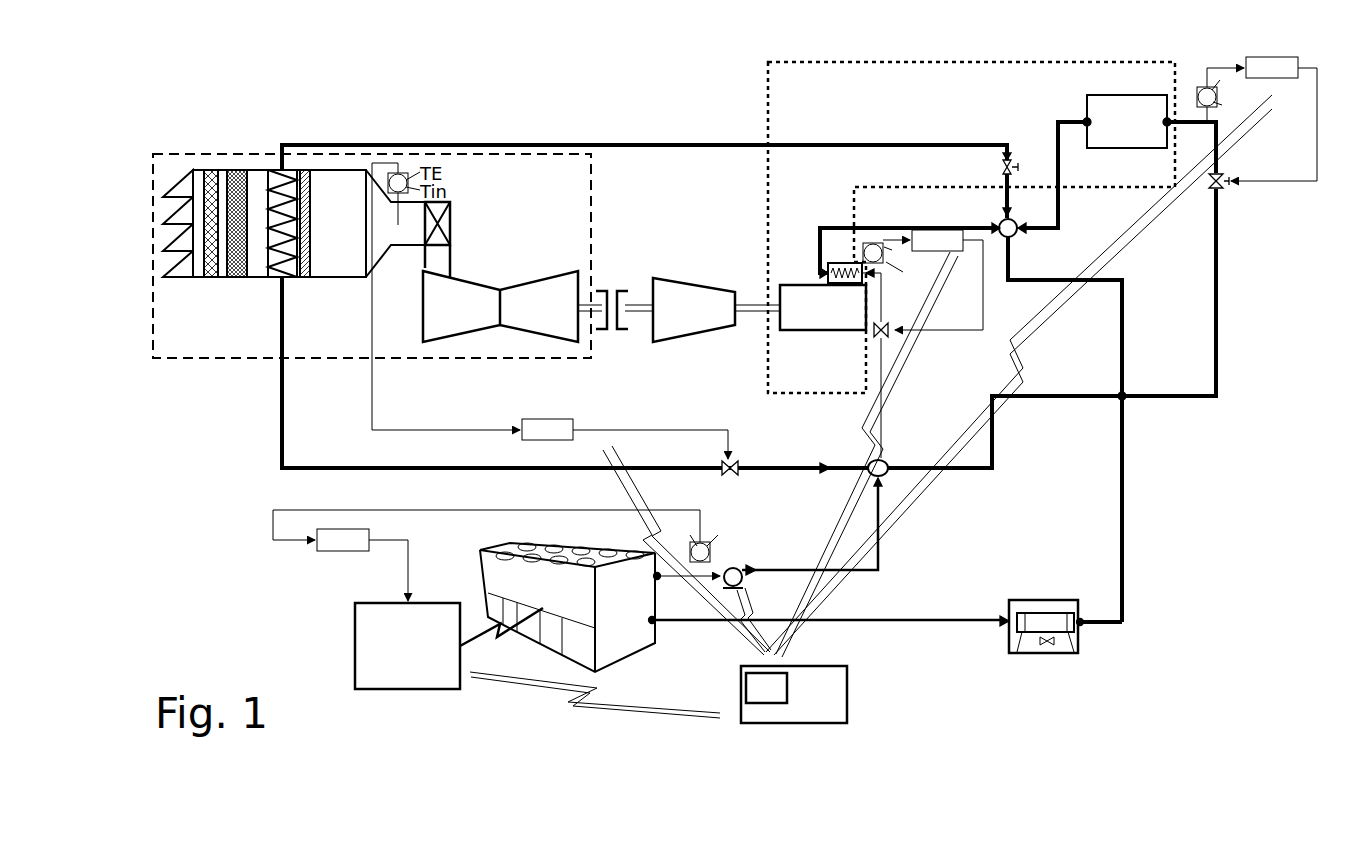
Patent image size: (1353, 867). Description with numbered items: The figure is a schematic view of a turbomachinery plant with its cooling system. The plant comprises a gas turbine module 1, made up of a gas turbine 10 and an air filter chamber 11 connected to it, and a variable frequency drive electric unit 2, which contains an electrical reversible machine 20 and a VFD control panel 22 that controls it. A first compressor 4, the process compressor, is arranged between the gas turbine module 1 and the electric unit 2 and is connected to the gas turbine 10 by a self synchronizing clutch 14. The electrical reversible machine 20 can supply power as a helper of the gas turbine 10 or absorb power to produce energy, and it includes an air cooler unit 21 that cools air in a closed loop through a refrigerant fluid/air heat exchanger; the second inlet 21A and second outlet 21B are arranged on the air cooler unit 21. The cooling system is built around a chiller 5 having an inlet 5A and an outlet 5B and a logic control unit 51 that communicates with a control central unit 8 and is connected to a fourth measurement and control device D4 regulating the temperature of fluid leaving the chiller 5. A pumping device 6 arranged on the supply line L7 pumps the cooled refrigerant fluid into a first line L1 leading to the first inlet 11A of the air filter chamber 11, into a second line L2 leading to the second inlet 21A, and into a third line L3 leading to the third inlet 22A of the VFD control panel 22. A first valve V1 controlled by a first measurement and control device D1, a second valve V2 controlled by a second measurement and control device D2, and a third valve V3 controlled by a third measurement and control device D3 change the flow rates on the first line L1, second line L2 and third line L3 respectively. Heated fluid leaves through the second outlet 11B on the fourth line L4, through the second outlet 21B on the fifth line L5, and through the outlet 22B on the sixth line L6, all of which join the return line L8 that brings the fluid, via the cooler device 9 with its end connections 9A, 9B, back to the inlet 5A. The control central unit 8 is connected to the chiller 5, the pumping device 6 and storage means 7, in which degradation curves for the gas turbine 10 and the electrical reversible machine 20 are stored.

The gas turbine module 1 is at (180, 150).
The air filter chamber 11 is at (208, 292).
The first inlet 11A is at (282, 272).
The second outlet 11B is at (283, 178).
The fourth line L4 is at (394, 146).
The gas turbine 10 is at (494, 267).
The self synchronizing clutch 14 is at (614, 277).
The first compressor 4 is at (692, 282).
The variable frequency drive electric unit 2 is at (808, 58).
The VFD control panel 22 is at (1123, 93).
The third inlet 22A is at (1166, 123).
The outlet 22B is at (1086, 119).
The sixth line L6 is at (1057, 138).
The third measurement and control device D3 is at (1268, 53).
The third valve V3 is at (1226, 202).
The fifth line L5 is at (846, 222).
The electrical reversible machine 20 is at (780, 342).
The air cooler unit 21 is at (846, 291).
The second inlet 21A is at (879, 265).
The second outlet 21B is at (826, 277).
The second measurement and control device D2 is at (963, 260).
The second valve V2 is at (899, 343).
The second line L2 is at (883, 452).
The third line L3 is at (1060, 398).
The first line L1 is at (770, 465).
The first valve V1 is at (726, 480).
The first measurement and control device D1 is at (583, 425).
The pumping device 6 is at (737, 556).
The supply line L7 is at (770, 566).
The chiller 5 is at (643, 663).
The inlet 5A is at (655, 623).
The outlet 5B is at (659, 579).
The logic control unit 51 is at (537, 660).
The fourth measurement and control device D4 is at (313, 556).
The storage means 7 is at (766, 688).
The control central unit 8 is at (794, 695).
The return line L8 is at (905, 620).
The cooler device 9 is at (1048, 675).
The radiator inlet 9A is at (1080, 630).
The radiator outlet 9B is at (1009, 628).